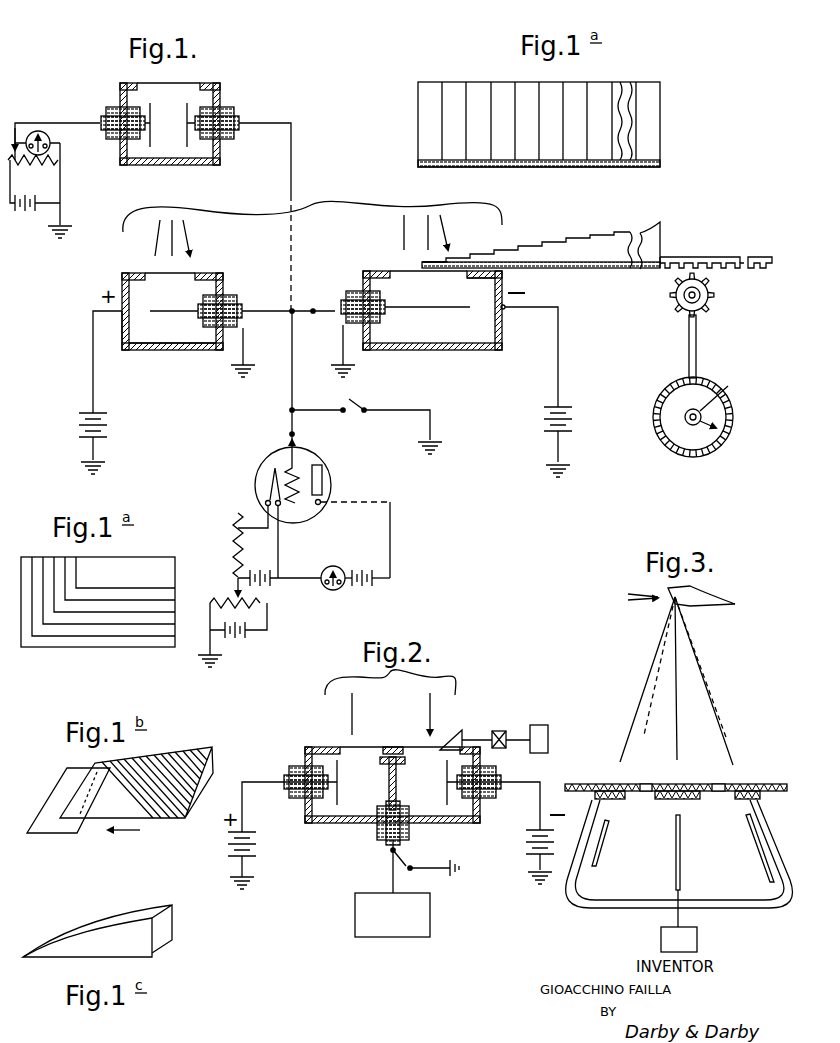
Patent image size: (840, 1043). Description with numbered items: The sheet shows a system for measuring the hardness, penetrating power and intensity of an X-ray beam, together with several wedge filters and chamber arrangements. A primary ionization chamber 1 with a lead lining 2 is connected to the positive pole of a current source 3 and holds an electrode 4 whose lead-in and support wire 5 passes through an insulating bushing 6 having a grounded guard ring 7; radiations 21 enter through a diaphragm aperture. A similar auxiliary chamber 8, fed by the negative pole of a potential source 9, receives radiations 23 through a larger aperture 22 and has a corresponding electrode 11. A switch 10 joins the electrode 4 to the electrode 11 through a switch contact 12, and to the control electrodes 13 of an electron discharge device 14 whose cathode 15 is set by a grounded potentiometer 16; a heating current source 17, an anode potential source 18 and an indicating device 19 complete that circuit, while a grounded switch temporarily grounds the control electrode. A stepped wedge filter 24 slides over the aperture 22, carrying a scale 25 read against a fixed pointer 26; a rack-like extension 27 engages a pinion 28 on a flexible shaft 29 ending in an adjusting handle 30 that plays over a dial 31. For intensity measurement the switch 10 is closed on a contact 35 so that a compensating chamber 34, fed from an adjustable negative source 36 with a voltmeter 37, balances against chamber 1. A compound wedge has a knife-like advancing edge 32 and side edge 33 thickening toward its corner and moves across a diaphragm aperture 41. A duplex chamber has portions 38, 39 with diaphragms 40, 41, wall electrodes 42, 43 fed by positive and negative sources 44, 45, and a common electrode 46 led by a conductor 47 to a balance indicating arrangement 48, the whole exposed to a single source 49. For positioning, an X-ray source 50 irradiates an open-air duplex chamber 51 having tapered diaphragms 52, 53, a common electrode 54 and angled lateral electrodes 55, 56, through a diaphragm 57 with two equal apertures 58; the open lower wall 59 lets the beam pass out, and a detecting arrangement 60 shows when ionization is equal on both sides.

In FIG. 1, the ionization chamber 1 is at (184, 303).
In FIG. 1, the lead lining 2 is at (133, 328).
In FIG. 1, the battery 3 is at (80, 418).
In FIG. 1, the electrode 4 is at (167, 312).
In FIG. 1, the lead-in and support wire 5 is at (262, 303).
In FIG. 1, the insulating bushing 6 is at (248, 316).
In FIG. 1, the grounded guard ring 7 is at (244, 292).
In FIG. 1, the auxiliary ionization chamber 8 is at (372, 274).
In FIG. 1, the potential source 9 is at (573, 413).
In FIG. 1, the switch 10 is at (300, 306).
In FIG. 1, the electrode 11 is at (443, 310).
In FIG. 1, the switch contact 12 is at (313, 315).
In FIG. 1, the control electrode 13 is at (290, 477).
In FIG. 1, the electron discharge device 14 is at (328, 470).
In FIG. 1, the cathode 15 is at (265, 489).
In FIG. 1, the grounded potentiometer 16 is at (234, 600).
In FIG. 1, the source of cathode heating current 17 is at (258, 572).
In FIG. 1, the anode potential source 18 is at (365, 568).
In FIG. 1, the indicating device 19 is at (333, 566).
In FIG. 1, the ionizing radiations 21 is at (185, 236).
In FIG. 1, the diaphragm aperture 22 is at (440, 276).
In FIG. 1, the ionizing radiations 23 is at (430, 232).
In FIG. 1, the wedge shaped filter 24 is at (605, 242).
In FIG. 1, the scale 25 is at (593, 270).
In FIG. 1A, the scale 25 is at (662, 168).
In FIG. 1, the fixed pointer 26 is at (505, 268).
In FIG. 1, the rack-like extension 27 is at (680, 262).
In FIG. 2, the rack-like extension 27 is at (480, 745).
In FIG. 1, the pinion 28 is at (712, 296).
In FIG. 2, the pinion 28 is at (505, 728).
In FIG. 1, the flexible shaft 29 is at (698, 358).
In FIG. 2, the flexible shaft 29 is at (522, 750).
In FIG. 1, the adjusting handle 30 is at (721, 397).
In FIG. 2, the adjusting handle 30 is at (540, 724).
In FIG. 1, the dial 31 is at (715, 447).
In FIG. 1B, the advancing edge 32 is at (80, 776).
In FIG. 1B, the side edge 33 is at (96, 820).
In FIG. 2, the side edge 33 is at (440, 750).
In FIG. 1, the compensating ionization chamber 34 is at (228, 104).
In FIG. 1B, the compensating ionization chamber 34 is at (212, 747).
In FIG. 2, the compensating ionization chamber 34 is at (462, 735).
In FIG. 1, the switch contact 35 is at (293, 282).
In FIG. 1, the adjustable source of negative potential 36 is at (57, 186).
In FIG. 1, the voltmeter 37 is at (43, 130).
In FIG. 2, the duplex chamber portion 38 is at (318, 808).
In FIG. 2, the duplex chamber portion 39 is at (482, 808).
In FIG. 2, the aperture diaphragm 40 is at (348, 760).
In FIG. 1B, the aperture diaphragm 41 is at (55, 828).
In FIG. 2, the aperture diaphragm 41 is at (432, 768).
In FIG. 2, the electrode 42 is at (324, 792).
In FIG. 2, the electrode 43 is at (446, 792).
In FIG. 2, the positive potential source 44 is at (222, 845).
In FIG. 2, the negative potential source 45 is at (525, 848).
In FIG. 2, the common electrode 46 is at (388, 775).
In FIG. 2, the conductor 47 is at (397, 845).
In FIG. 2, the balance indicating arrangement 48 is at (425, 907).
In FIG. 2, the source of ionizing radiations 49 is at (355, 727).
In FIG. 3, the source of X-rays 50 is at (655, 606).
In FIG. 3, the duplex ionization chamber 51 is at (572, 903).
In FIG. 3, the tapered apertured diaphragm 52 is at (644, 799).
In FIG. 3, the tapered apertured diaphragm 53 is at (718, 799).
In FIG. 3, the common electrode 54 is at (681, 860).
In FIG. 3, the lateral electrode 55 is at (615, 860).
In FIG. 3, the lateral electrode 56 is at (758, 880).
In FIG. 3, the diaphragm 57 is at (765, 790).
In FIG. 3, the slits or apertures 58 is at (718, 786).
In FIG. 3, the open lower wall 59 is at (684, 908).
In FIG. 3, the detecting arrangement 60 is at (661, 940).